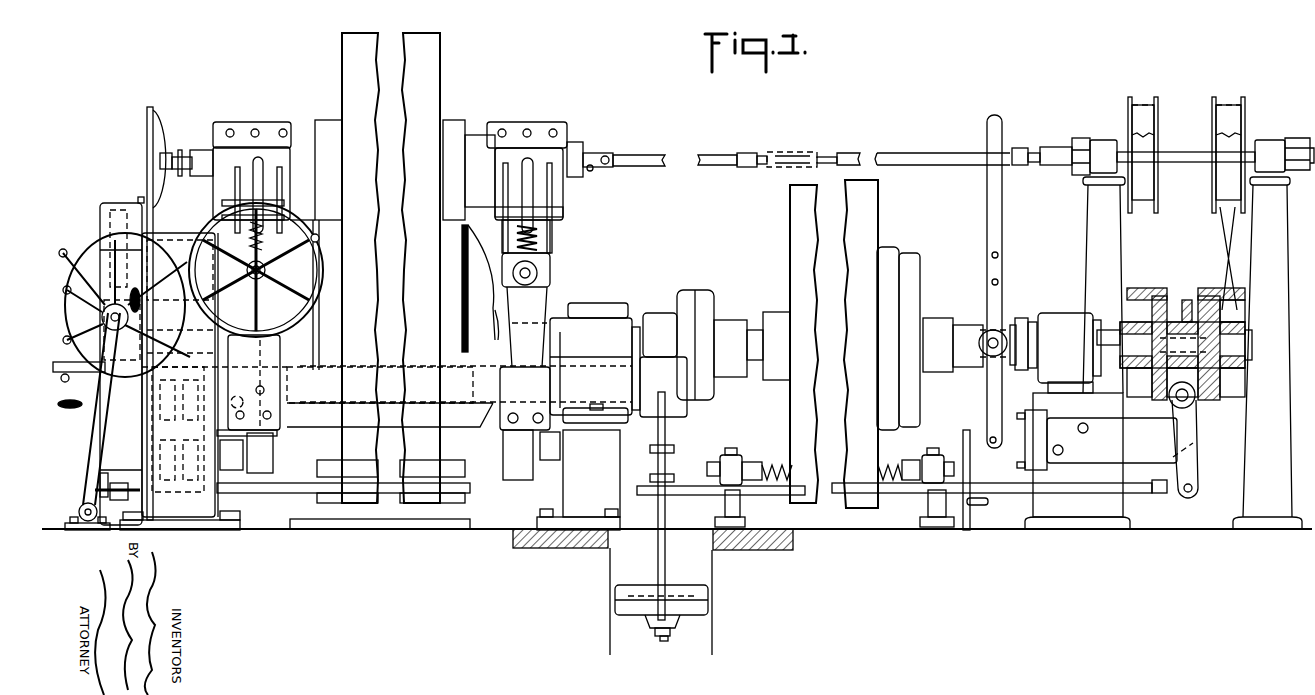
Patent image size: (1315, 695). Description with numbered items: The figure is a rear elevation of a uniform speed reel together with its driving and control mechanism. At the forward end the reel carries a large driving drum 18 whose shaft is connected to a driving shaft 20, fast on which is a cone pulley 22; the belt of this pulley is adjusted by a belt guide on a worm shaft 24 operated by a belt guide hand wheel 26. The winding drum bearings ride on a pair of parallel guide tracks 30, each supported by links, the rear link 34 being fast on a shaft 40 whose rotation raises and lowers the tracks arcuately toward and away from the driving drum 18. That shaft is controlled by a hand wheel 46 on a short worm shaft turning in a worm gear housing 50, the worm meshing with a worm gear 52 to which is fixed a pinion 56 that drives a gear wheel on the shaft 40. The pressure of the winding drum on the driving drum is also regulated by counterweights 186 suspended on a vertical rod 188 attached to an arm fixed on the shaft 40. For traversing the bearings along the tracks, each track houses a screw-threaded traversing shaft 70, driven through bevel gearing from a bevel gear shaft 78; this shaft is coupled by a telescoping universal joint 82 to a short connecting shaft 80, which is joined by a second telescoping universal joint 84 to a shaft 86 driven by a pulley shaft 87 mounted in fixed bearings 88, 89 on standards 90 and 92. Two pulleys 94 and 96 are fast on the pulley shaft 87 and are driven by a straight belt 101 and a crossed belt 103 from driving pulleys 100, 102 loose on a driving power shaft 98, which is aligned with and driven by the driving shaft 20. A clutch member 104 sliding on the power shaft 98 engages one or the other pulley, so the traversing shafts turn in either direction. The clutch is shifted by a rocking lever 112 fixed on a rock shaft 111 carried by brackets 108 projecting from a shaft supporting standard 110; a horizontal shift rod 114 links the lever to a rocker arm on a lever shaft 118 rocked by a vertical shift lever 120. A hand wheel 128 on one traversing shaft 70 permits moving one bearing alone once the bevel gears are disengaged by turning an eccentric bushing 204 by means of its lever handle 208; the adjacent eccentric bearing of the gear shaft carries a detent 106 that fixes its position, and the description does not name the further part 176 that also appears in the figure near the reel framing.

The driving drum 18 is at (688, 298).
The driving shaft 20 is at (750, 337).
The cone pulley 22 is at (868, 208).
The worm shaft 24 is at (890, 474).
The belt guide hand wheel 26 is at (963, 502).
The guide tracks 30 is at (553, 267).
The rear link 34 is at (262, 352).
The shaft 40 is at (333, 378).
The hand wheel 46 is at (92, 240).
The worm gear housing 50 is at (183, 478).
The worm gear 52 is at (118, 210).
The pinion 56 is at (172, 250).
The screw-threaded traversing shaft 70 is at (262, 247).
The bevel gear shaft 78 is at (592, 170).
The connecting shaft 80 is at (715, 157).
The telescoping universal joint 82 is at (620, 155).
The telescoping universal joint 84 is at (800, 153).
The shaft 86 is at (913, 158).
The pulley shaft 87 is at (1172, 152).
The bearing 88 is at (1098, 152).
The bearing 89 is at (1265, 142).
The standard 90 is at (1097, 225).
The standard 92 is at (1272, 262).
The pulley 94 is at (1157, 115).
The pulley 96 is at (1245, 108).
The driving power shaft 98 is at (1228, 348).
The driving pulley 100 is at (1158, 293).
The straight belt 101 is at (1148, 266).
The driving pulley 102 is at (1238, 298).
The crossed belt 103 is at (1225, 228).
The clutch member 104 is at (1193, 310).
The shaft 106 is at (180, 172).
The brackets 108 is at (1150, 450).
The shaft supporting standard 110 is at (1068, 514).
The rock shaft 111 is at (1192, 400).
The rocking lever 112 is at (1193, 447).
The horizontal shift rod 114 is at (260, 493).
The lever shaft 118 is at (83, 507).
The shift lever 120 is at (100, 455).
The hand wheel 128 is at (318, 292).
The column 176 is at (430, 78).
The counterweights 186 is at (700, 605).
The vertical rod 188 is at (663, 576).
The eccentric bushing 204 is at (583, 155).
The lever handle 208 is at (252, 177).